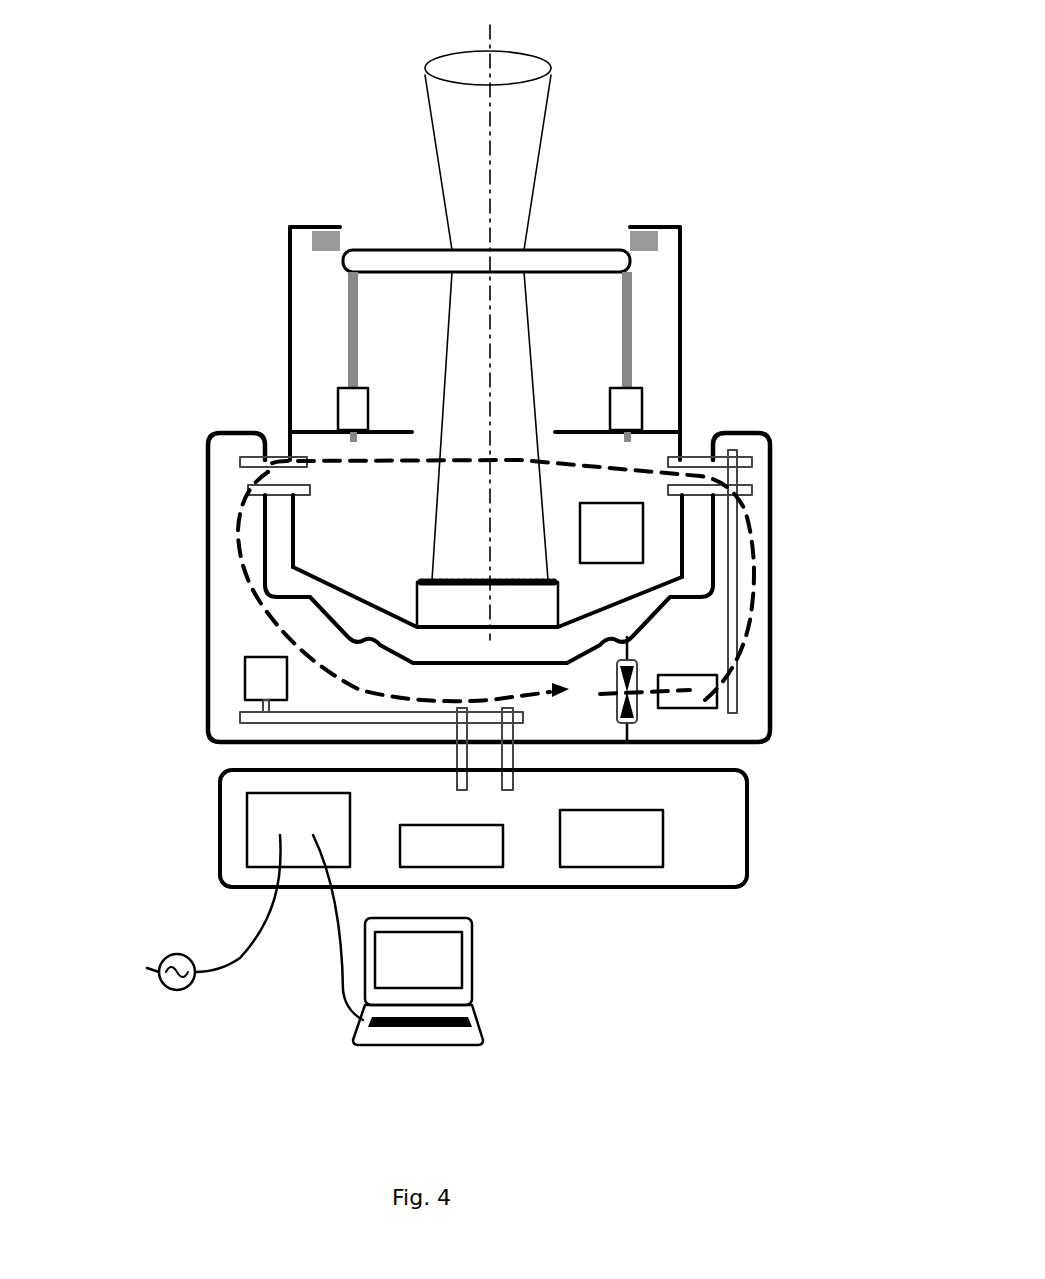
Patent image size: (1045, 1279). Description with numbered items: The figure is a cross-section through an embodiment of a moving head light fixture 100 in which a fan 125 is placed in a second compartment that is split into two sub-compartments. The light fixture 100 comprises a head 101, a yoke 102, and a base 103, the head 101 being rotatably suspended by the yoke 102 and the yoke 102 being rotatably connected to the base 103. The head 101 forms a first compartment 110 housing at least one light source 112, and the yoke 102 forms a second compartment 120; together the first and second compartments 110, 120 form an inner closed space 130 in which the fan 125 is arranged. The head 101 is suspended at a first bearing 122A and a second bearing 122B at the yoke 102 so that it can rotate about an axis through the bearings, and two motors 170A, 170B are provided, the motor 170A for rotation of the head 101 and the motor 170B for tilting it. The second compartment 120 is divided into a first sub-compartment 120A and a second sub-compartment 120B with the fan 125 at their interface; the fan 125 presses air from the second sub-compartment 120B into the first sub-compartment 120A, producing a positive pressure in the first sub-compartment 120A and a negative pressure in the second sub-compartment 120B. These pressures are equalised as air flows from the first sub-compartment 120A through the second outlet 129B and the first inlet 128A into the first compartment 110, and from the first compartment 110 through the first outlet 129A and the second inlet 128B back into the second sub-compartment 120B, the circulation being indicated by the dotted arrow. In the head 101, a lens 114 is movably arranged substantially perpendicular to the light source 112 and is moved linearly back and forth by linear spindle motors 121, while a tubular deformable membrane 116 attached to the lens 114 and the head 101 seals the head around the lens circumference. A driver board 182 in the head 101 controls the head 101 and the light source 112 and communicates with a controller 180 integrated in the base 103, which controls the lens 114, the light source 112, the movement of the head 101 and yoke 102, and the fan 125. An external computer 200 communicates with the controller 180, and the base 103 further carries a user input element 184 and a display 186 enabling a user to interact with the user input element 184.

The light fixture 100 is at (742, 74).
The head 101 is at (733, 343).
The first compartment 110 is at (657, 357).
The lens 114 is at (565, 262).
The deformable membrane 116 is at (312, 228).
The motors 121 is at (348, 410).
The closed space 130 is at (313, 293).
The yoke 102 is at (406, 587).
The second compartment 120 is at (240, 602).
The first sub-compartment 120A is at (765, 678).
The second sub-compartment 120B is at (187, 667).
The first bearing 122A is at (170, 493).
The second bearing 122B is at (800, 548).
The first inlet 128A is at (800, 548).
The second inlet 128B is at (240, 465).
The first outlet 129A is at (170, 493).
The second outlet 129B is at (869, 415).
The driver board 182 is at (627, 538).
The light source 112 is at (530, 605).
The motor 170A is at (283, 683).
The motor 170B is at (698, 697).
The fan 125 is at (637, 717).
The base 103 is at (697, 830).
The controller 180 is at (272, 830).
The user input element 184 is at (443, 837).
The display 186 is at (603, 838).
The external computer 200 is at (438, 962).